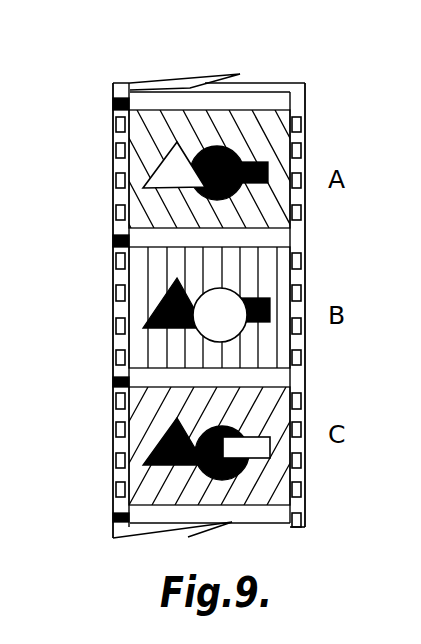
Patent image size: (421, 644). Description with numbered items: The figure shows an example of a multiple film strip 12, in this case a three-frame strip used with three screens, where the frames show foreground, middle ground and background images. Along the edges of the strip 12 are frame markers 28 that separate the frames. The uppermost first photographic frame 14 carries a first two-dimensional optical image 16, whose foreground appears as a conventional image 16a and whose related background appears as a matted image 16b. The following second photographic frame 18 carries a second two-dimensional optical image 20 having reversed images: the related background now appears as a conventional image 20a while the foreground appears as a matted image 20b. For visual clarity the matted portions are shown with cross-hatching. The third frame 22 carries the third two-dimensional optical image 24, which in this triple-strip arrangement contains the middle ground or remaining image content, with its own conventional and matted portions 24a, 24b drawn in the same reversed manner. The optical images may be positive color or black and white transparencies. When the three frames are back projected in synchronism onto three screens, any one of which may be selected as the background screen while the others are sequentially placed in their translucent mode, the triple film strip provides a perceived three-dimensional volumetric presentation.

The film strip 12 is at (190, 87).
The frame marker 28 is at (113, 105).
The first photographic frame 14 is at (137, 138).
The first two-dimensional optical image 16 is at (160, 201).
The conventional image 16a is at (172, 182).
The matted image 16b is at (215, 202).
The second photographic frame 18 is at (148, 273).
The second two-dimensional optical image 20 is at (161, 328).
The conventional image 20a is at (220, 342).
The matted image 20b is at (205, 330).
The third frame background 22 is at (137, 417).
The third two-dimensional optical image 24 is at (161, 482).
The rectangle of third frame image 24a is at (262, 452).
The circle of third frame image 24b is at (203, 477).